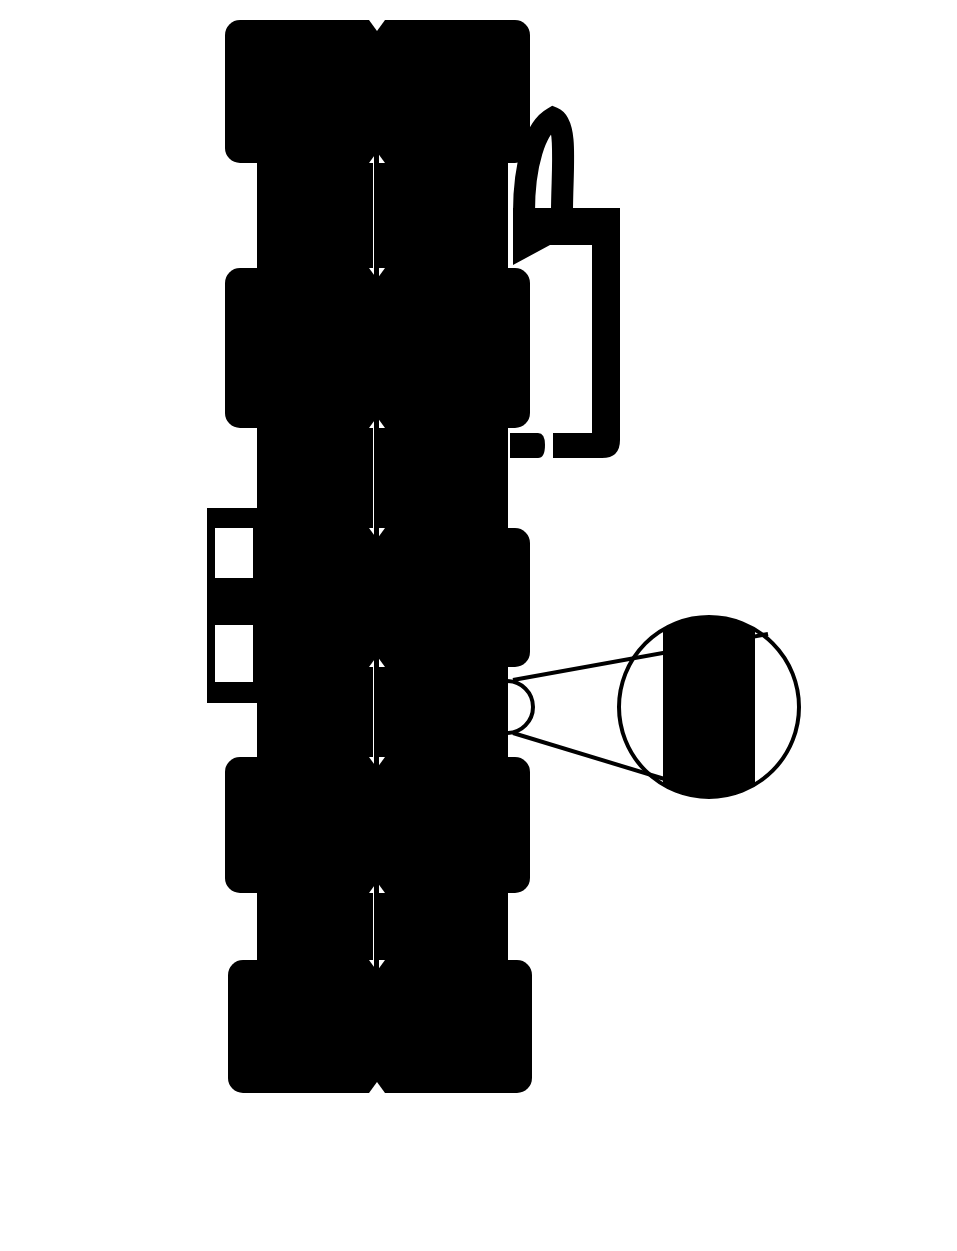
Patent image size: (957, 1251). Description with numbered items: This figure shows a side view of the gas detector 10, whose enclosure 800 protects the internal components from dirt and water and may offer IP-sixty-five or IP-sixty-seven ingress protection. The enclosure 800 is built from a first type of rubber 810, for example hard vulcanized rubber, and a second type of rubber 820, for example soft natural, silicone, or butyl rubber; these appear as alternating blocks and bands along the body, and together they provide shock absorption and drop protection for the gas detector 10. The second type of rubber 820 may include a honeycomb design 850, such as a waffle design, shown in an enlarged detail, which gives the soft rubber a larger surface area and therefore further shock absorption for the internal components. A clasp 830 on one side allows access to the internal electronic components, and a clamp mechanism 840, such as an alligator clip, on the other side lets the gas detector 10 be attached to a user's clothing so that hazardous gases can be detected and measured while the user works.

The gas detector 10 is at (123, 128).
The enclosure 800 is at (228, 1033).
The first type of rubber 810 is at (532, 1000).
The second type of rubber 820 is at (513, 915).
The clasp 830 is at (207, 633).
The clamp mechanism 840 is at (622, 367).
The honeycomb design 850 is at (768, 634).